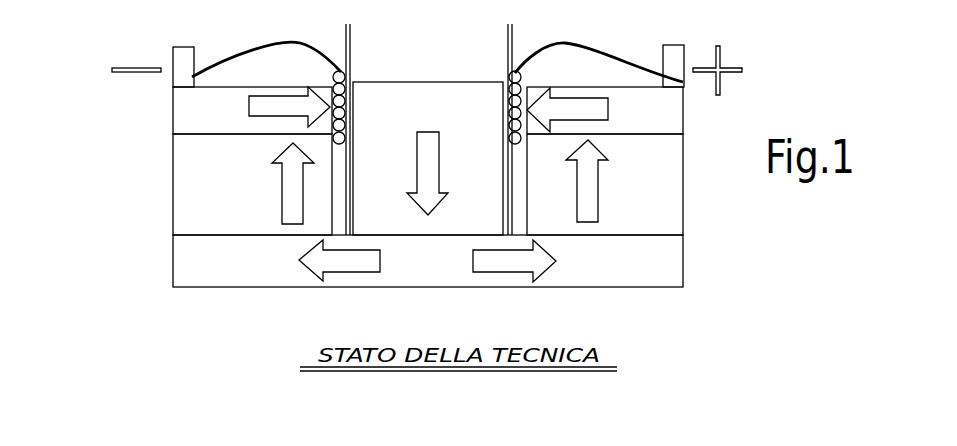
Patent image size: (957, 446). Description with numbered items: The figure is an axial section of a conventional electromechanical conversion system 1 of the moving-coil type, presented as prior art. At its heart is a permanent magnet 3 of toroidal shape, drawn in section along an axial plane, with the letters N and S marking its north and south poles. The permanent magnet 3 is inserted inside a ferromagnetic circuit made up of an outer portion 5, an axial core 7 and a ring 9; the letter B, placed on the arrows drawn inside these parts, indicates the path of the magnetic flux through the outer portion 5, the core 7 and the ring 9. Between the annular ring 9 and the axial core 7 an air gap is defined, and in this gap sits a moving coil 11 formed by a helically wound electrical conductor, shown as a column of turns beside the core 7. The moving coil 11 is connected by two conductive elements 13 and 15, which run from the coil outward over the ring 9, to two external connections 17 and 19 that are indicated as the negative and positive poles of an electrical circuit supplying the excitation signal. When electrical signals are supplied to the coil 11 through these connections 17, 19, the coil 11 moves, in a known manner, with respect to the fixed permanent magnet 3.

The electromechanical conversion system 1 is at (156, 298).
The permanent magnet 3 is at (665, 190).
The outer portion 5 is at (663, 268).
The axial core 7 is at (419, 92).
The ring 9 is at (185, 117).
The moving coil 11 is at (513, 98).
The conductive element 13 is at (254, 53).
The conductive element 15 is at (600, 52).
The external connection 17 is at (180, 62).
The external connection 19 is at (677, 57).